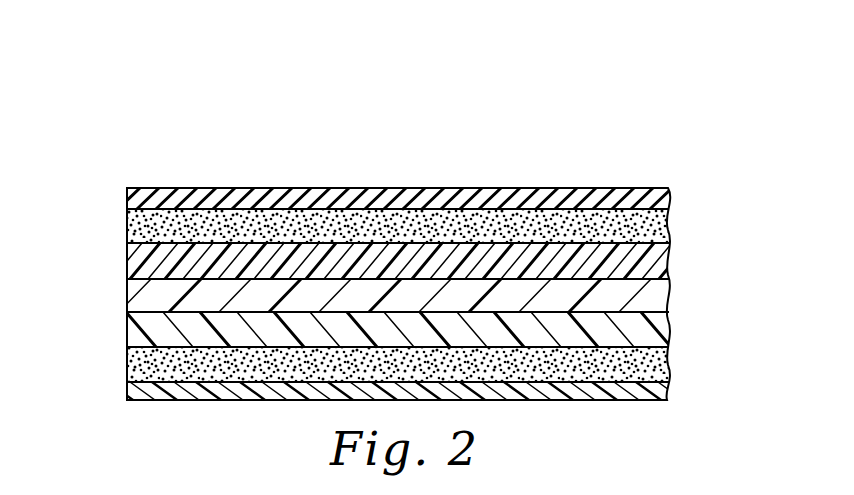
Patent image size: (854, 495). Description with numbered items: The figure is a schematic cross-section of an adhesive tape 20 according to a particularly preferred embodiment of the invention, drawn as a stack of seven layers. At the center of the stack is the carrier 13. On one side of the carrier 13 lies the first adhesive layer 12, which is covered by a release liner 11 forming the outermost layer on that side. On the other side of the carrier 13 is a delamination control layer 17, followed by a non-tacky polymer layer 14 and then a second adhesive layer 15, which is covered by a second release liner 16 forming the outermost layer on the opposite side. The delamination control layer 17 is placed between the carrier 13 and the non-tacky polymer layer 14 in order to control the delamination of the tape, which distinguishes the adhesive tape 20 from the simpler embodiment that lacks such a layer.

The adhesive tape 20 is at (234, 140).
The release liner 11 is at (128, 199).
The first adhesive layer 12 is at (128, 228).
The carrier 13 is at (655, 250).
The delamination control layer 17 is at (128, 289).
The non-tacky polymer layer 14 is at (128, 326).
The second adhesive layer 15 is at (655, 358).
The release liner 16 is at (128, 393).